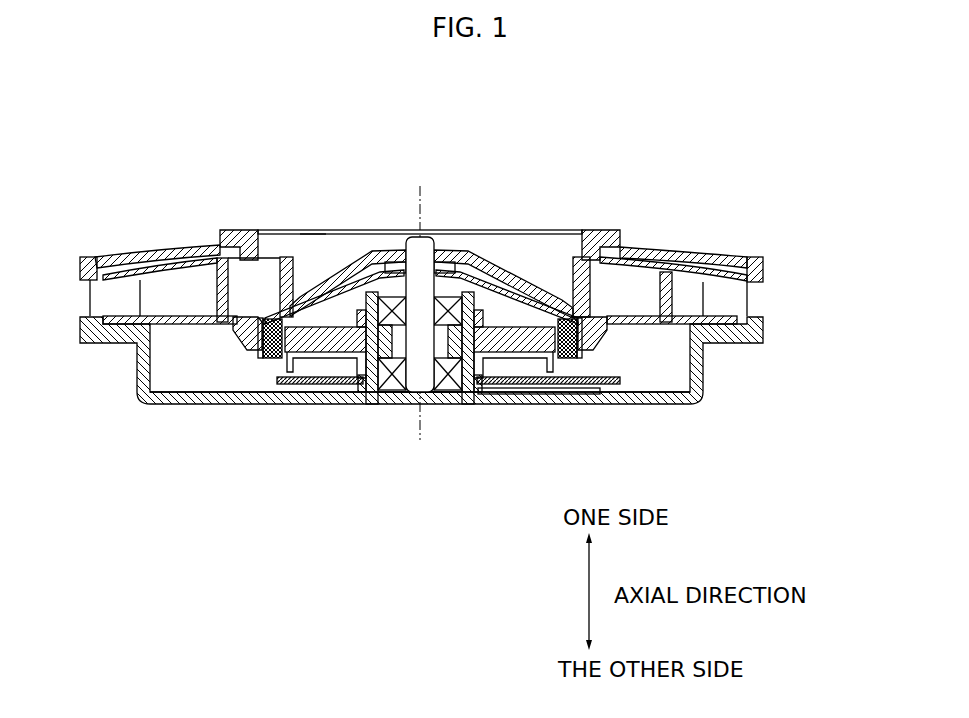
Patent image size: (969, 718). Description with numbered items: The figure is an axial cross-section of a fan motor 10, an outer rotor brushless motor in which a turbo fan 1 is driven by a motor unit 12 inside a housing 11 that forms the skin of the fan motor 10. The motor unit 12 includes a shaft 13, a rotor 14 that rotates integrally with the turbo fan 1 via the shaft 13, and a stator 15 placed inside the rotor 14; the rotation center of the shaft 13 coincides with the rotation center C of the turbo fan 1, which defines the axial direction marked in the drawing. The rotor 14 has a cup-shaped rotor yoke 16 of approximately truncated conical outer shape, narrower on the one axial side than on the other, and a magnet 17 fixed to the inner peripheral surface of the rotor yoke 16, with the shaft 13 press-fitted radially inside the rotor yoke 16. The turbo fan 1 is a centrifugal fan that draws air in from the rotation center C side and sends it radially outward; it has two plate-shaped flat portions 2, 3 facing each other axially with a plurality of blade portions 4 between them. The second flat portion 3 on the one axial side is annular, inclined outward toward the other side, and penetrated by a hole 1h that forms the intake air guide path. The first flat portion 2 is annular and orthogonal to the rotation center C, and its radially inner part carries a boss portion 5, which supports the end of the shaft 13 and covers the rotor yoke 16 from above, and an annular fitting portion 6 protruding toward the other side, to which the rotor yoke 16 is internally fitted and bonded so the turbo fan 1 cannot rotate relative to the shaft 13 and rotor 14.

The turbo fan 1 is at (533, 250).
The hole 1h is at (312, 250).
The first flat portion 2 is at (125, 313).
The second flat portion 3 is at (713, 283).
The blade portions 4 is at (217, 290).
The boss portion 5 is at (480, 260).
The fitting portion 6 is at (235, 333).
The fan motor 10 is at (725, 205).
The housing 11 is at (705, 368).
The motor unit 12 is at (631, 366).
The shaft 13 is at (428, 387).
The rotor 14 is at (253, 347).
The stator 15 is at (332, 358).
The rotor yoke 16 is at (315, 307).
The magnet 17 is at (268, 357).
The rotation center C is at (419, 300).